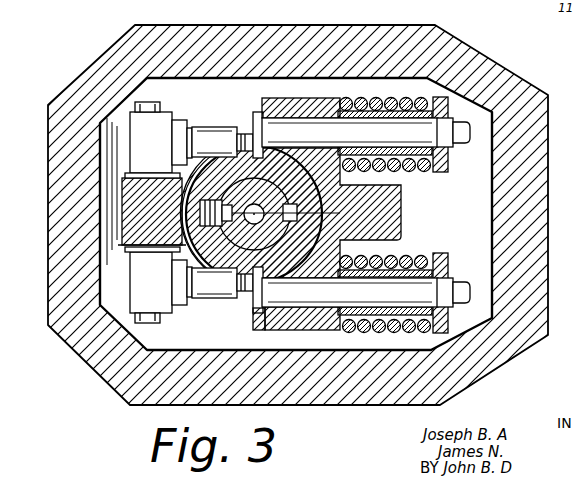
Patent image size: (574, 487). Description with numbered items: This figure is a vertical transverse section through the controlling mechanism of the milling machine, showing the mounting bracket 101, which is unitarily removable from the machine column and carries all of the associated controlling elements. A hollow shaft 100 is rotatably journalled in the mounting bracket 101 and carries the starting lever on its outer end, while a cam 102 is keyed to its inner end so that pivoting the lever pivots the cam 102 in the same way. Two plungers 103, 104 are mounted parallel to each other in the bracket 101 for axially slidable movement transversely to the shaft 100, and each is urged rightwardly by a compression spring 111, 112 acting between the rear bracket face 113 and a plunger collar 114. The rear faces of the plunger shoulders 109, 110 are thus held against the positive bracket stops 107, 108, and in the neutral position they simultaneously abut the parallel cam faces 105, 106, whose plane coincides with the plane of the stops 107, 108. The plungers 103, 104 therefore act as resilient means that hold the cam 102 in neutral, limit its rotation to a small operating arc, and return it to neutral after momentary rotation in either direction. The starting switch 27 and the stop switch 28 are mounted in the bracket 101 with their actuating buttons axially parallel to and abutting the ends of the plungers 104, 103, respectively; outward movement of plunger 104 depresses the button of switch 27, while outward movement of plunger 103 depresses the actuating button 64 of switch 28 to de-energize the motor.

The starting switch 27 is at (160, 120).
The stop switch 28 is at (163, 306).
The actuating button 64 is at (243, 300).
The hollow shaft 100 is at (403, 198).
The mounting bracket 101 is at (117, 243).
The cam 102 is at (193, 182).
The plunger 103 is at (328, 295).
The plunger 104 is at (297, 133).
The cam face 105 is at (247, 282).
The cam face 106 is at (248, 150).
The positive bracket stop 107 is at (302, 312).
The positive bracket stop 108 is at (280, 104).
The plunger shoulder 109 is at (257, 318).
The plunger shoulder 110 is at (252, 118).
The compression spring 111 is at (405, 262).
The compression spring 112 is at (392, 100).
The rear bracket face 113 is at (345, 100).
The plunger collar 114 is at (448, 166).